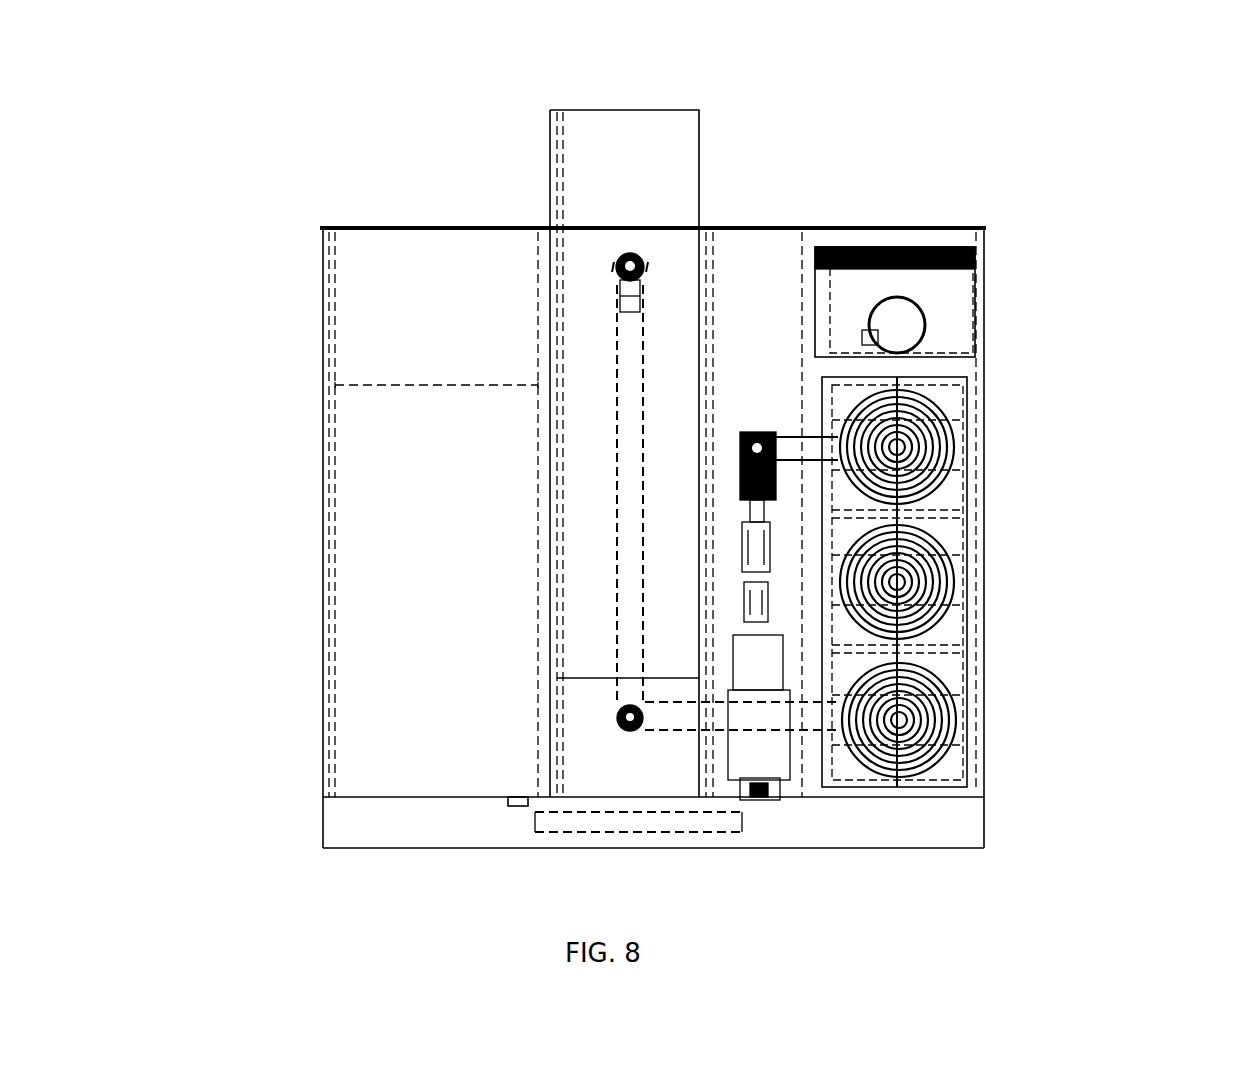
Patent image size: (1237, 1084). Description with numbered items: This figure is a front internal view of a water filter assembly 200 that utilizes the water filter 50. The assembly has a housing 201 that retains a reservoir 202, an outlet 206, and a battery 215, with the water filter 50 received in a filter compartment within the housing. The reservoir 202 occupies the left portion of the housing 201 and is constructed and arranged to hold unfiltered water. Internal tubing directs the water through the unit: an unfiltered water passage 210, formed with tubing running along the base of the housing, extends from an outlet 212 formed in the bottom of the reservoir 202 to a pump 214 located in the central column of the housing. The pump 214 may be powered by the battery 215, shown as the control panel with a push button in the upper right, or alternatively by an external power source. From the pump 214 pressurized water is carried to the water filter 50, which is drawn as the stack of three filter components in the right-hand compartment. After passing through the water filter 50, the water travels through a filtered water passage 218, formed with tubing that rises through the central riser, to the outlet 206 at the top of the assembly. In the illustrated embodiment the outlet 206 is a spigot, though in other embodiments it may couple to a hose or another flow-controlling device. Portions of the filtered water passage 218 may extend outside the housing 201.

The water filter assembly 200 is at (1108, 112).
The housing 201 is at (323, 270).
The reservoir 202 is at (375, 578).
The outlet 206 is at (650, 262).
The filtered water passage 218 is at (632, 482).
The pump 214 is at (777, 760).
The battery 215 is at (978, 312).
The water filter 50 is at (963, 470).
The unfiltered water passage 210 is at (697, 822).
The outlet 212 is at (508, 802).